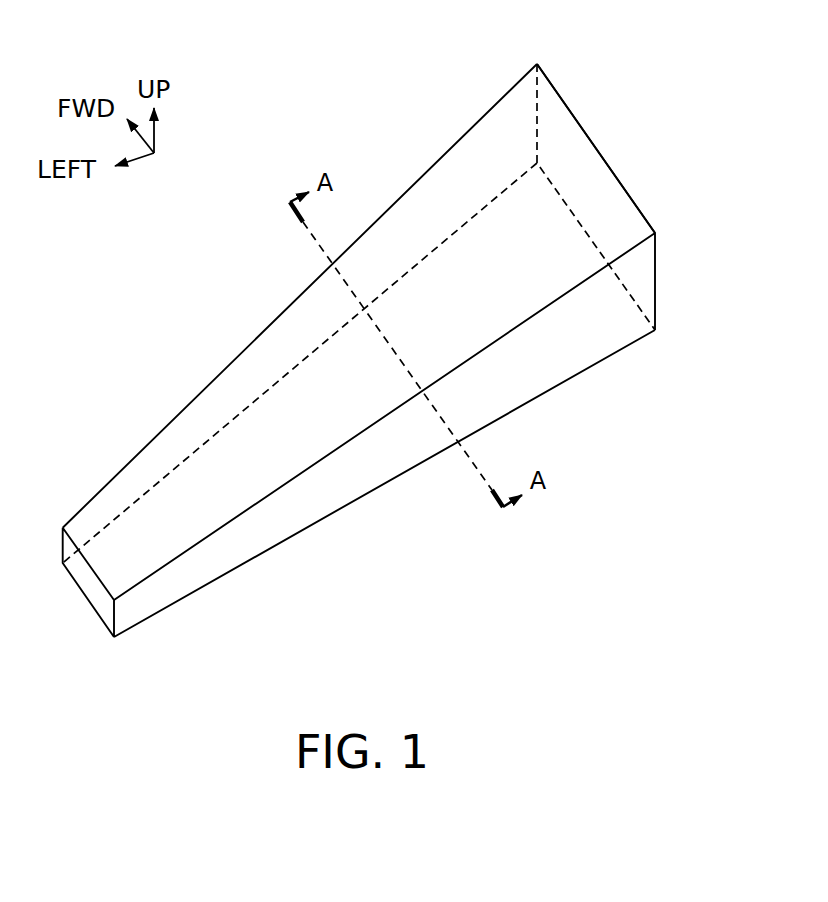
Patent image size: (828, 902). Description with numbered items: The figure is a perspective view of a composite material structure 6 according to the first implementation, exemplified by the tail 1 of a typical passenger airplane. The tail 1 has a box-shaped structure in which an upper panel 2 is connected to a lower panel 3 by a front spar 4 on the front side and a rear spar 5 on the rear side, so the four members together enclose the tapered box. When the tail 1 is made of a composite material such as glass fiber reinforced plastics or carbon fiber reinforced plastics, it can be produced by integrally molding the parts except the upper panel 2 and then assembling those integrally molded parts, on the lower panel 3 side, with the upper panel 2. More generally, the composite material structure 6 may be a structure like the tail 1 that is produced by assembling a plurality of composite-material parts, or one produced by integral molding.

The tail 1 is at (437, 86).
The upper panel 2 is at (583, 167).
The lower panel 3 is at (600, 320).
The front spar 4 is at (233, 380).
The rear spar 5 is at (318, 490).
The composite material structure 6 is at (560, 96).